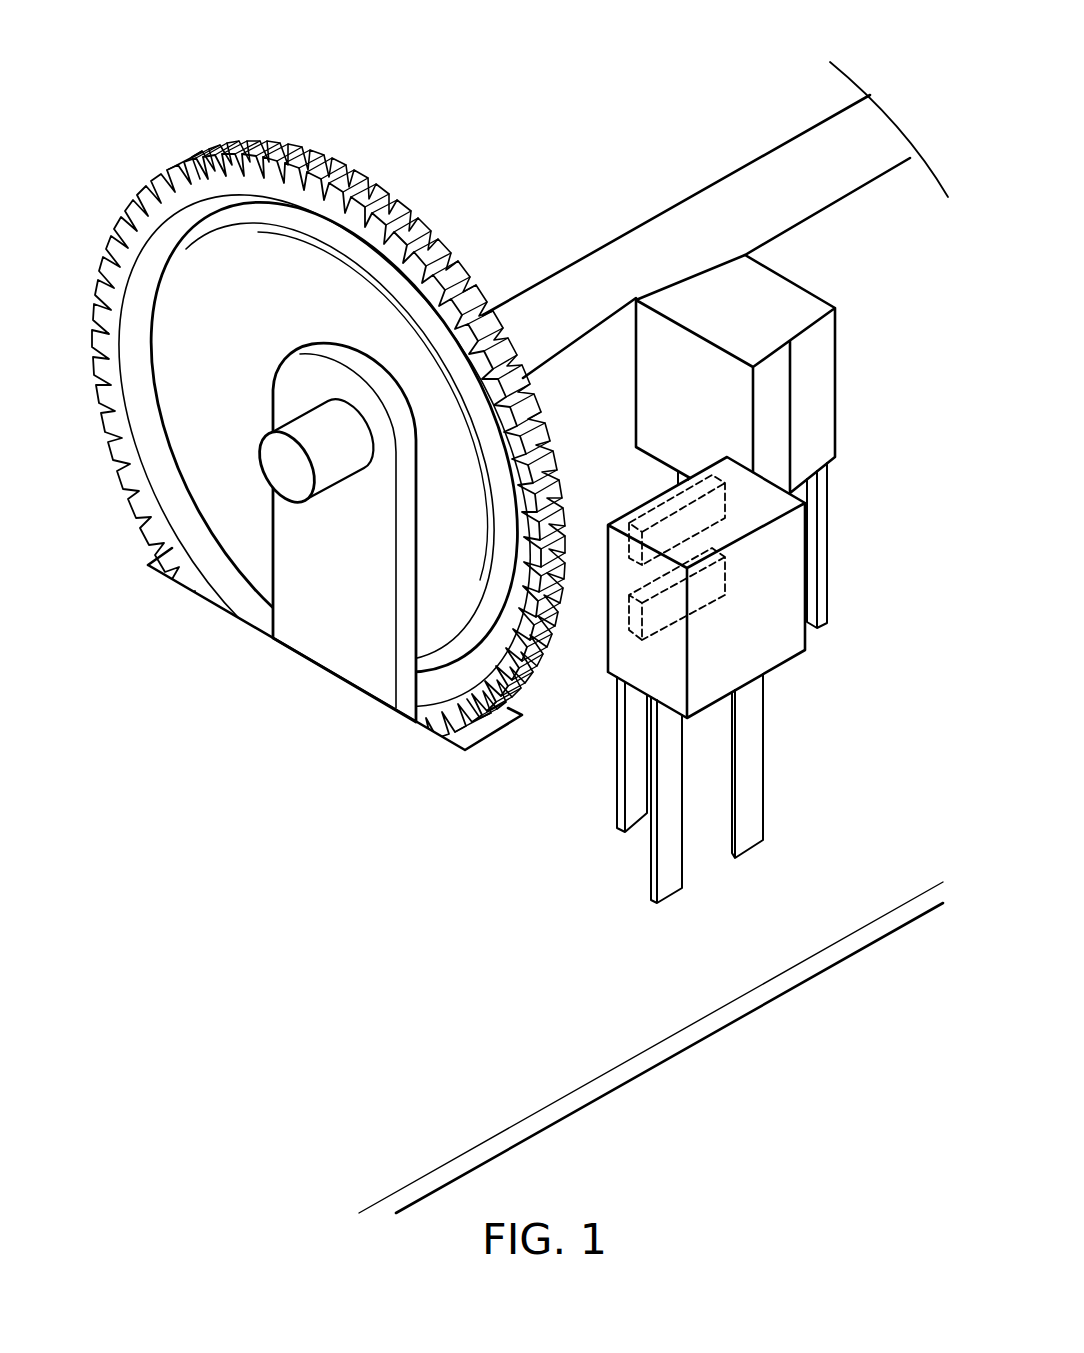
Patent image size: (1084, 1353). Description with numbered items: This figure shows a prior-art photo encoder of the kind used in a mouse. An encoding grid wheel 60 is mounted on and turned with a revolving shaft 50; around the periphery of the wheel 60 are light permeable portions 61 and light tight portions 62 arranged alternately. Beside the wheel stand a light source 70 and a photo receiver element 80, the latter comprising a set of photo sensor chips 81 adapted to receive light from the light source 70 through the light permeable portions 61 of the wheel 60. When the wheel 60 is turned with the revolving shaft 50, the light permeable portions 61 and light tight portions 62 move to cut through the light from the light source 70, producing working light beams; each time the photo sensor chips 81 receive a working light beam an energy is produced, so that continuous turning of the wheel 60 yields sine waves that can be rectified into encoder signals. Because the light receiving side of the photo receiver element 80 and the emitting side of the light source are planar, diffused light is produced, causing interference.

The revolving shaft 50 is at (312, 432).
The encoding grid wheel 60 is at (252, 267).
The light permeable portions 61 is at (345, 165).
The light tight portions 62 is at (372, 190).
The light source 70 is at (777, 305).
The photo receiver element 80 is at (643, 662).
The photo sensor chips 81 is at (629, 619).